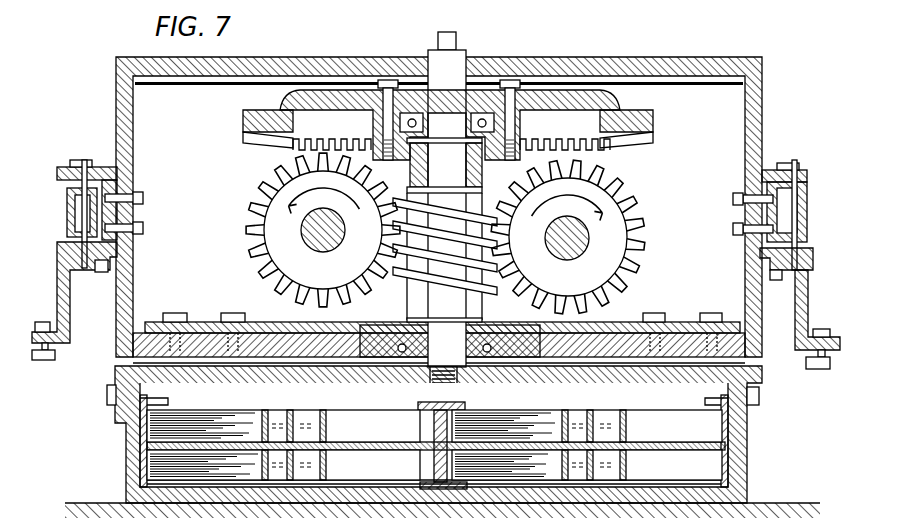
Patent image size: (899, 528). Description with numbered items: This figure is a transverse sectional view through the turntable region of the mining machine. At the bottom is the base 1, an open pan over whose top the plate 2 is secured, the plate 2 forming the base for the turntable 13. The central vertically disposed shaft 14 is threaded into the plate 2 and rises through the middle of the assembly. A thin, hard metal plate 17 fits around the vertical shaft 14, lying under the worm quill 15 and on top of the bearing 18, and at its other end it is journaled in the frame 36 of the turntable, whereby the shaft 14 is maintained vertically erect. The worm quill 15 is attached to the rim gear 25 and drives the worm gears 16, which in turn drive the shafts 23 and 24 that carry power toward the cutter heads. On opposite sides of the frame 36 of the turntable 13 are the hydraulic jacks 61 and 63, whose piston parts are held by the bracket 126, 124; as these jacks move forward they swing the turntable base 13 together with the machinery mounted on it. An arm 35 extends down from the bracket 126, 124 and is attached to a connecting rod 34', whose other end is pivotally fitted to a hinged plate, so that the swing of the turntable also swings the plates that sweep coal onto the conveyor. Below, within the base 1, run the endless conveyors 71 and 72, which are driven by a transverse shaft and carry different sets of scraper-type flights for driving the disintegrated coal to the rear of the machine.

The base 1 is at (126, 463).
The plate 2 is at (107, 385).
The turntable 13 is at (146, 330).
The central vertically disposed shaft 14 is at (458, 78).
The worm quill 15 is at (422, 282).
The worm gears 16 is at (222, 200).
The thin hard metal plate 17 is at (358, 330).
The bearing 18 is at (478, 353).
The shaft 23 is at (573, 258).
The shaft 24 is at (314, 252).
The rim gear 25 is at (628, 122).
The connecting rod 34' is at (431, 363).
The arm 35 is at (70, 308).
The frame 36 is at (788, 98).
The hydraulic jack 61 is at (805, 211).
The hydraulic jack 63 is at (70, 212).
The endless conveyor 71 is at (596, 396).
The endless conveyor 72 is at (296, 396).
The bracket 124 is at (62, 166).
The bracket 126 is at (810, 256).